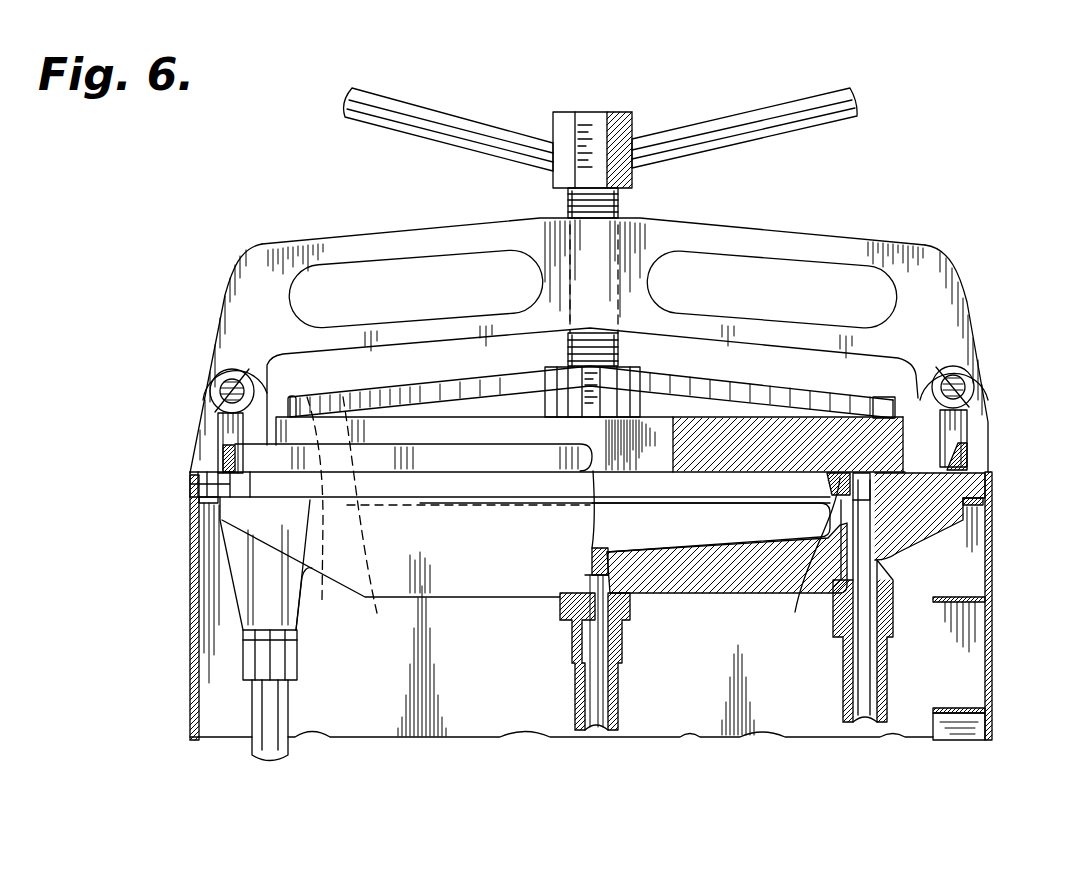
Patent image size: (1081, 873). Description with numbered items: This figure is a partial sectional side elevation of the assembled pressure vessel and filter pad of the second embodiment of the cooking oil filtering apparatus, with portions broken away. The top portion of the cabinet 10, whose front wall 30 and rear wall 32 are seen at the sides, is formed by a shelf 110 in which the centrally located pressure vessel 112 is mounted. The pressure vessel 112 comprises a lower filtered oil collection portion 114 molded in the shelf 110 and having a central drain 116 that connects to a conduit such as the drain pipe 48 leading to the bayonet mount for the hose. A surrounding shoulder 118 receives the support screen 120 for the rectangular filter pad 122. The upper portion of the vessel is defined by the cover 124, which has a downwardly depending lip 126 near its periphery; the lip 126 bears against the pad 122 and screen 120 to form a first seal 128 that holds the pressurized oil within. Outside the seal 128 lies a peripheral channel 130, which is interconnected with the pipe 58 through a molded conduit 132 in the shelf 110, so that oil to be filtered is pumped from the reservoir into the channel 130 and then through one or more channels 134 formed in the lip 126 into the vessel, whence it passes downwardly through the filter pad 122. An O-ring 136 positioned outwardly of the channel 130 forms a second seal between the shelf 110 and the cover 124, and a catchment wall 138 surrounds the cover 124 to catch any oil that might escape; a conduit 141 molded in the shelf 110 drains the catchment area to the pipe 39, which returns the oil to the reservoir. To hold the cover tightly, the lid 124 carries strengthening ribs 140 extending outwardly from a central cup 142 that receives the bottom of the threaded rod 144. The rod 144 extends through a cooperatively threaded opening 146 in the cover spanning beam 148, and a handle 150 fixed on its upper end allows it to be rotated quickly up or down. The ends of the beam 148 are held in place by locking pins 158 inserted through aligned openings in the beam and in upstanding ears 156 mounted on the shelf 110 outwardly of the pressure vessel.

The cabinet 10 is at (992, 600).
The front wall 30 is at (994, 652).
The rear wall 32 is at (192, 668).
The overflow drain pipe 39 is at (290, 710).
The drain pipe 48 is at (608, 705).
The pipe 58 is at (888, 700).
The shelf 110 is at (990, 490).
The pressure vessel 112 is at (728, 486).
The filtered oil collection portion 114 is at (666, 538).
The central drain 116 is at (600, 552).
The shoulder 118 is at (391, 522).
The support screen 120 is at (711, 527).
The filter pad 122 is at (616, 497).
The cover 124 is at (668, 418).
The downwardly depending lip 126 is at (349, 400).
The first seal 128 is at (572, 518).
The peripheral channel 130 is at (305, 400).
The molded conduit 132 is at (878, 557).
The channels 134 is at (852, 440).
The O-ring 136 is at (285, 487).
The catchment wall 138 is at (217, 453).
The strengthening ribs 140 is at (445, 393).
The conduit 141 is at (200, 573).
The central cup 142 is at (610, 386).
The threaded rod 144 is at (622, 206).
The threaded opening 146 is at (648, 252).
The cover spanning beam 148 is at (787, 241).
The handle 150 is at (693, 132).
The upstanding ears 156 is at (212, 416).
The locking pins 158 is at (208, 382).